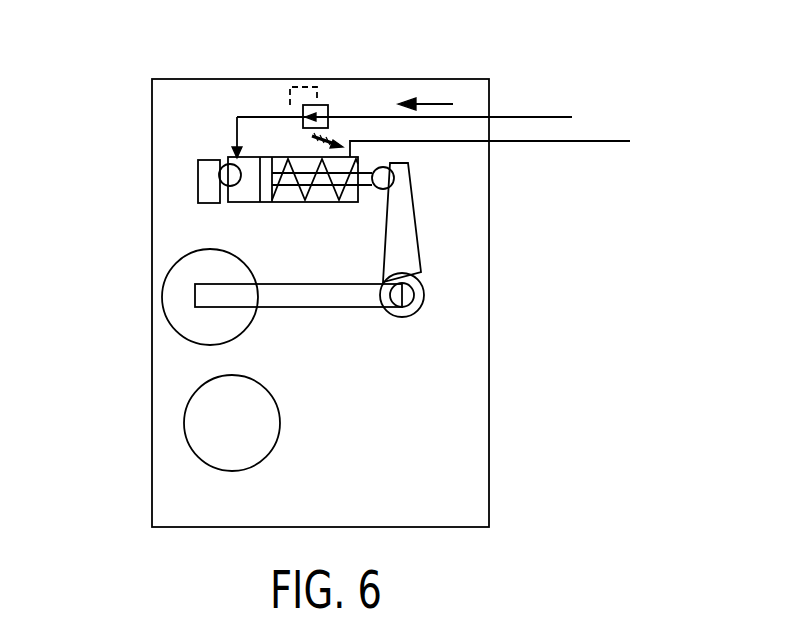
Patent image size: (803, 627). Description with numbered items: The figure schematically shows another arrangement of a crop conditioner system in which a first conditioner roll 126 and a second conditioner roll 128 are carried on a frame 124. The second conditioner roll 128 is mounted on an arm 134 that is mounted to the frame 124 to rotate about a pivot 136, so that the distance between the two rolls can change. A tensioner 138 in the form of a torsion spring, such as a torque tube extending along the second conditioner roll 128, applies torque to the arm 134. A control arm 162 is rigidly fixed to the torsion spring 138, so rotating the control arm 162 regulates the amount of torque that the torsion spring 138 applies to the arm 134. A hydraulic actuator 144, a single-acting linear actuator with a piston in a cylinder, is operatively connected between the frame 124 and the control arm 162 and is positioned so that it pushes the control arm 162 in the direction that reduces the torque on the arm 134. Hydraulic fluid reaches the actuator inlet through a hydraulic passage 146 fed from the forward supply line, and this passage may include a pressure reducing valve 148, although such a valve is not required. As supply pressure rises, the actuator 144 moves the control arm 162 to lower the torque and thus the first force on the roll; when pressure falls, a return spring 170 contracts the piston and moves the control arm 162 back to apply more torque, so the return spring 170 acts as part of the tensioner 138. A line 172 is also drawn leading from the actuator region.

The frame 124 is at (184, 100).
The first conditioner roll 126 is at (195, 425).
The second conditioner roll 128 is at (188, 277).
The arm 134 is at (357, 308).
The pivot 136 is at (408, 290).
The tensioner 138 is at (413, 276).
The hydraulic actuator 144 is at (233, 165).
The hydraulic passage 146 is at (535, 117).
The pressure reducing valve 148 is at (325, 107).
The control arm 162 is at (405, 218).
The return spring 170 is at (298, 190).
The return line 172 is at (580, 141).